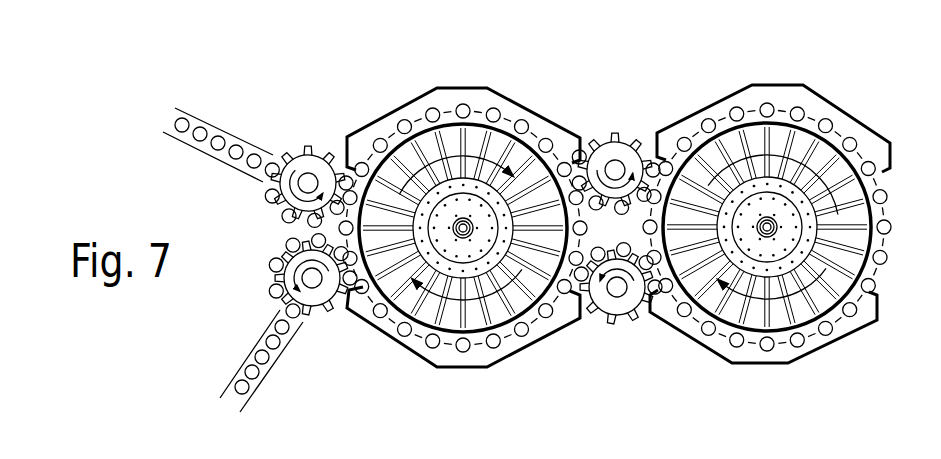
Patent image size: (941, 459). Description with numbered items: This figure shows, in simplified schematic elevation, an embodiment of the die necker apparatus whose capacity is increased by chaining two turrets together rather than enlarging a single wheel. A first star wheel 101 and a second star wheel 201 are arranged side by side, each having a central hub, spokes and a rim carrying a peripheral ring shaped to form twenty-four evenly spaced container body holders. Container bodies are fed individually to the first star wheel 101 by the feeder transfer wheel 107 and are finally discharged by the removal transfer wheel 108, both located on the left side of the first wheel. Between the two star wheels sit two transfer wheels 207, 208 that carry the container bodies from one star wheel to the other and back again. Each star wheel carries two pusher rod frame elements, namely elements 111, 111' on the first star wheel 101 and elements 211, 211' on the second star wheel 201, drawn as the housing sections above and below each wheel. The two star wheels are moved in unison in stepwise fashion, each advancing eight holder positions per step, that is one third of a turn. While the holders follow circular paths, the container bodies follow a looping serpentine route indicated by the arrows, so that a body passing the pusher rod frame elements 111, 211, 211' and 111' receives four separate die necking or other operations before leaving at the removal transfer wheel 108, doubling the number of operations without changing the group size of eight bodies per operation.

The star wheel 101 is at (455, 224).
The feeder transfer wheel 107 is at (305, 150).
The removal transfer wheel 108 is at (338, 312).
The pusher rod frame element 111 is at (452, 115).
The pusher rod frame element 111' is at (463, 357).
The star wheel 201 is at (778, 215).
The transfer wheel 207 is at (643, 132).
The transfer wheel 208 is at (637, 327).
The pusher rod frame element 211 is at (766, 104).
The pusher rod frame element 211' is at (782, 349).